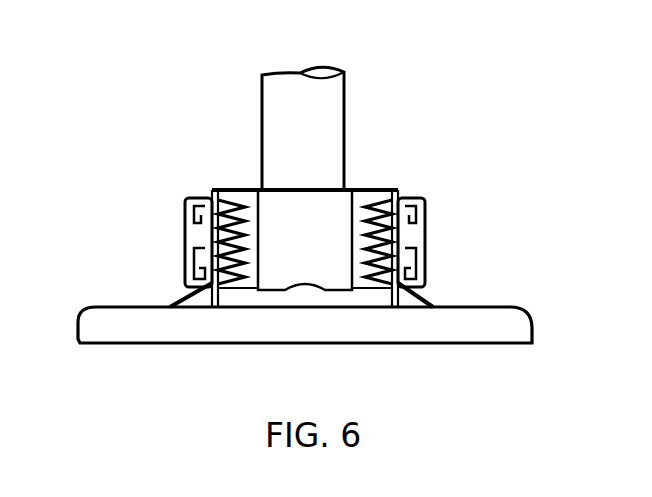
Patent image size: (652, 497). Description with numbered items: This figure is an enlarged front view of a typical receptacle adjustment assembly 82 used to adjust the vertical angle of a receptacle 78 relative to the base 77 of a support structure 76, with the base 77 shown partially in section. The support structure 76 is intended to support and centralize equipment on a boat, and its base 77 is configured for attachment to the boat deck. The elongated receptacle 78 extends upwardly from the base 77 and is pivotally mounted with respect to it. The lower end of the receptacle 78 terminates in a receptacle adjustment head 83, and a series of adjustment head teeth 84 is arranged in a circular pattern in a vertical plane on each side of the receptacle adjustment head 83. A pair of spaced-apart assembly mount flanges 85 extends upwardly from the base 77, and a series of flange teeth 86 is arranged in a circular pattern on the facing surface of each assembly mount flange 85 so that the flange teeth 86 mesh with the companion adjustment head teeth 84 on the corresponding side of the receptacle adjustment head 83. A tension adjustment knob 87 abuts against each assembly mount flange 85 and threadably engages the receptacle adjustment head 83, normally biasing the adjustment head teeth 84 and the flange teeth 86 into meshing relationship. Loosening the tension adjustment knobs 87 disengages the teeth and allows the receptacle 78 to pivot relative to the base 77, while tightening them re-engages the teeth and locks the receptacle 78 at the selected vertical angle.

The support structure 76 is at (200, 117).
The base 77 is at (513, 328).
The receptacle 78 is at (317, 132).
The receptacle adjustment assembly 82 is at (213, 184).
The receptacle adjustment head 83 is at (297, 212).
The adjustment head teeth 84 is at (192, 216).
The assembly mount flange 85 is at (383, 297).
The flange teeth 86 is at (372, 236).
The tension adjustment knob 87 is at (184, 246).